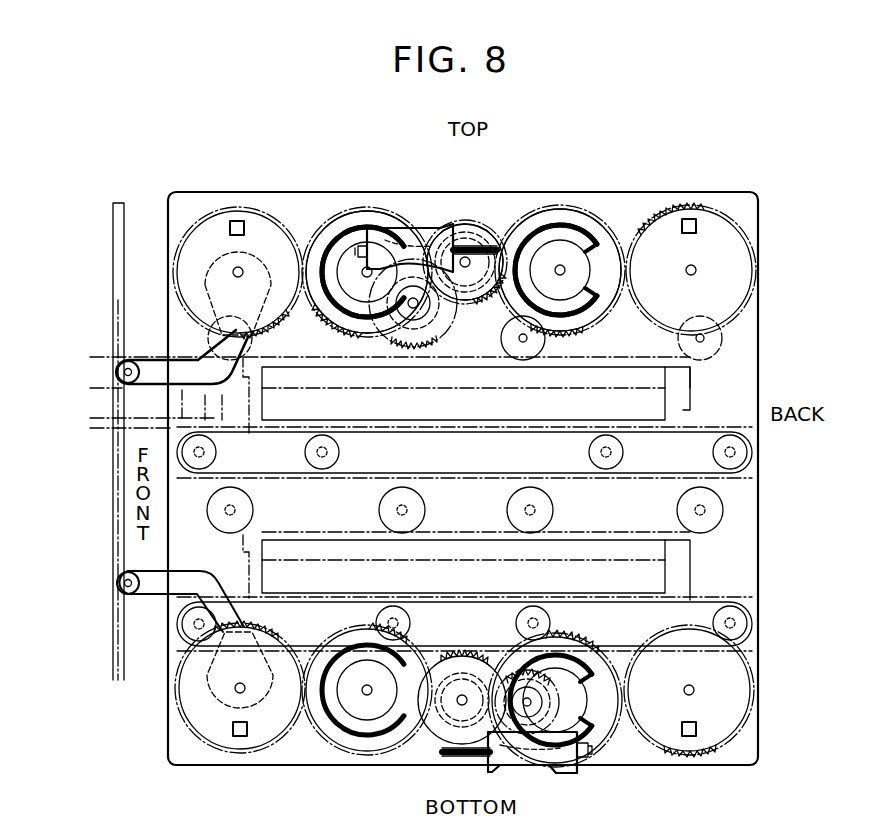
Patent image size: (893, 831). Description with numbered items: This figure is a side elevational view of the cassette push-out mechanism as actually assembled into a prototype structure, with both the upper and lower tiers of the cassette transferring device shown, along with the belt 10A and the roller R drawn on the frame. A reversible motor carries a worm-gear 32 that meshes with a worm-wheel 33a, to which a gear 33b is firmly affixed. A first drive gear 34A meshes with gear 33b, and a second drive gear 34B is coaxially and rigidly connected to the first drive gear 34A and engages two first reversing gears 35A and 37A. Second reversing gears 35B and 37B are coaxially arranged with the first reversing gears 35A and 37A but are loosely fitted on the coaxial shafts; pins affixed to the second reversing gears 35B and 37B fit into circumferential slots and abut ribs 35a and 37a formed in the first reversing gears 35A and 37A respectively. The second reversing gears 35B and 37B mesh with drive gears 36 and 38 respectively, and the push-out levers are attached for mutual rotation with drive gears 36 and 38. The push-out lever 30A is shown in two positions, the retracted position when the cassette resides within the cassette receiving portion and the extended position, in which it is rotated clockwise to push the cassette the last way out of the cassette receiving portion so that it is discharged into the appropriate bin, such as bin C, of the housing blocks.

The conveyor belt 10A is at (247, 440).
The push-out lever 30A is at (152, 370).
The worm-gear 32 is at (432, 240).
The worm-wheel 33a is at (405, 325).
The gear 33b is at (428, 312).
The first drive gear 34A is at (482, 300).
The second drive gear 34B is at (465, 235).
The first reversing gear 35A is at (340, 215).
The second reversing gear 35B is at (367, 272).
The rib 35a is at (398, 236).
The drive gear 36 is at (215, 228).
The first reversing gear 37A is at (545, 210).
The second reversing gear 37B is at (560, 270).
The rib 37a is at (598, 262).
The drive gear 38 is at (718, 215).
The roller R is at (722, 350).
The bin C is at (700, 378).